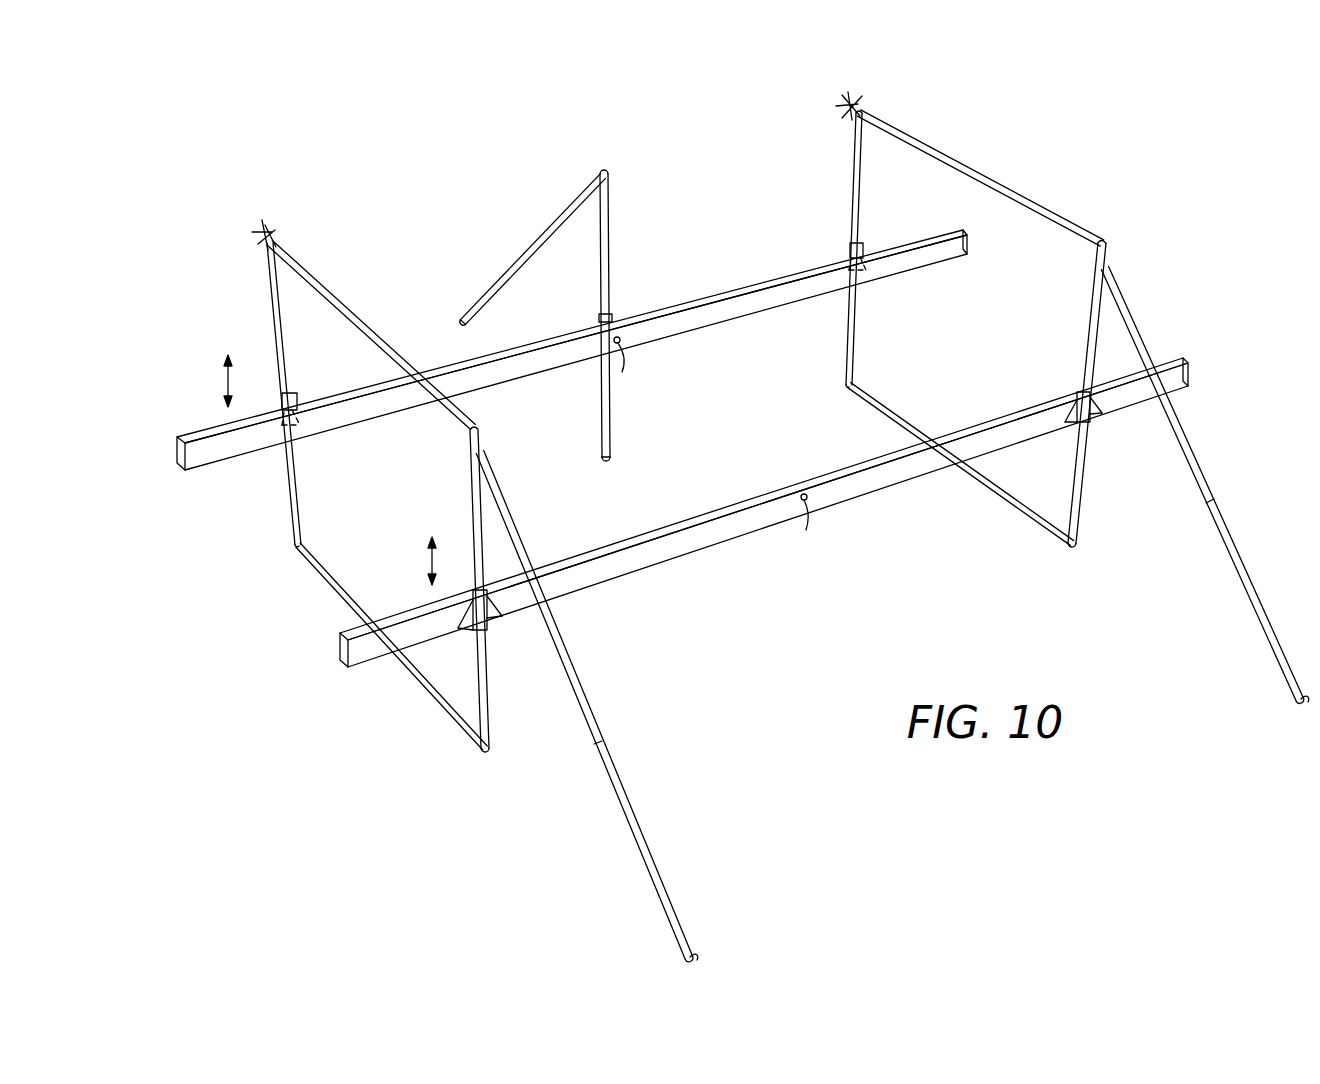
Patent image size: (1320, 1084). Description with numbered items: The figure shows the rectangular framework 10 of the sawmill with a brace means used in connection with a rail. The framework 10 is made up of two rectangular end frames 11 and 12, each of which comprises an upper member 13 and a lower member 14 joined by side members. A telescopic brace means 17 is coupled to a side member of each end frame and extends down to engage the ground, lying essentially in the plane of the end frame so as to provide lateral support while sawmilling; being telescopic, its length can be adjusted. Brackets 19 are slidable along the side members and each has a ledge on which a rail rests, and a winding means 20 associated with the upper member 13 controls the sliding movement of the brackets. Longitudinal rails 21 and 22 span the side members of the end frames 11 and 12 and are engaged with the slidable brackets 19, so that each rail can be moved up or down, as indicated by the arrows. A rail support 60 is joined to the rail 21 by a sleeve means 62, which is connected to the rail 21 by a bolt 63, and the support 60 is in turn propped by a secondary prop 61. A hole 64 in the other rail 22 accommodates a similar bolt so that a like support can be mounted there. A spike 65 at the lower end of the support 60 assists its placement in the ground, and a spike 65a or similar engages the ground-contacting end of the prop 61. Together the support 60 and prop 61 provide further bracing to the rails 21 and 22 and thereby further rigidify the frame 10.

The rectangular framework 10 is at (645, 182).
The end frame 11 is at (1006, 181).
The end frame 12 is at (368, 290).
The upper member 13 is at (1100, 236).
The lower member 14 is at (898, 414).
The telescopic brace means 17 is at (599, 731).
The bracket 19 is at (1092, 416).
The winding means 20 is at (826, 109).
The longitudinal rail 21 is at (775, 272).
The longitudinal rail 22 is at (921, 463).
The rail support 60 is at (611, 250).
The secondary prop 61 is at (528, 243).
The sleeve means 62 is at (618, 312).
The bolt 63 is at (622, 372).
The hole 64 is at (806, 530).
The spike 65 is at (610, 458).
The spike 65a is at (454, 310).